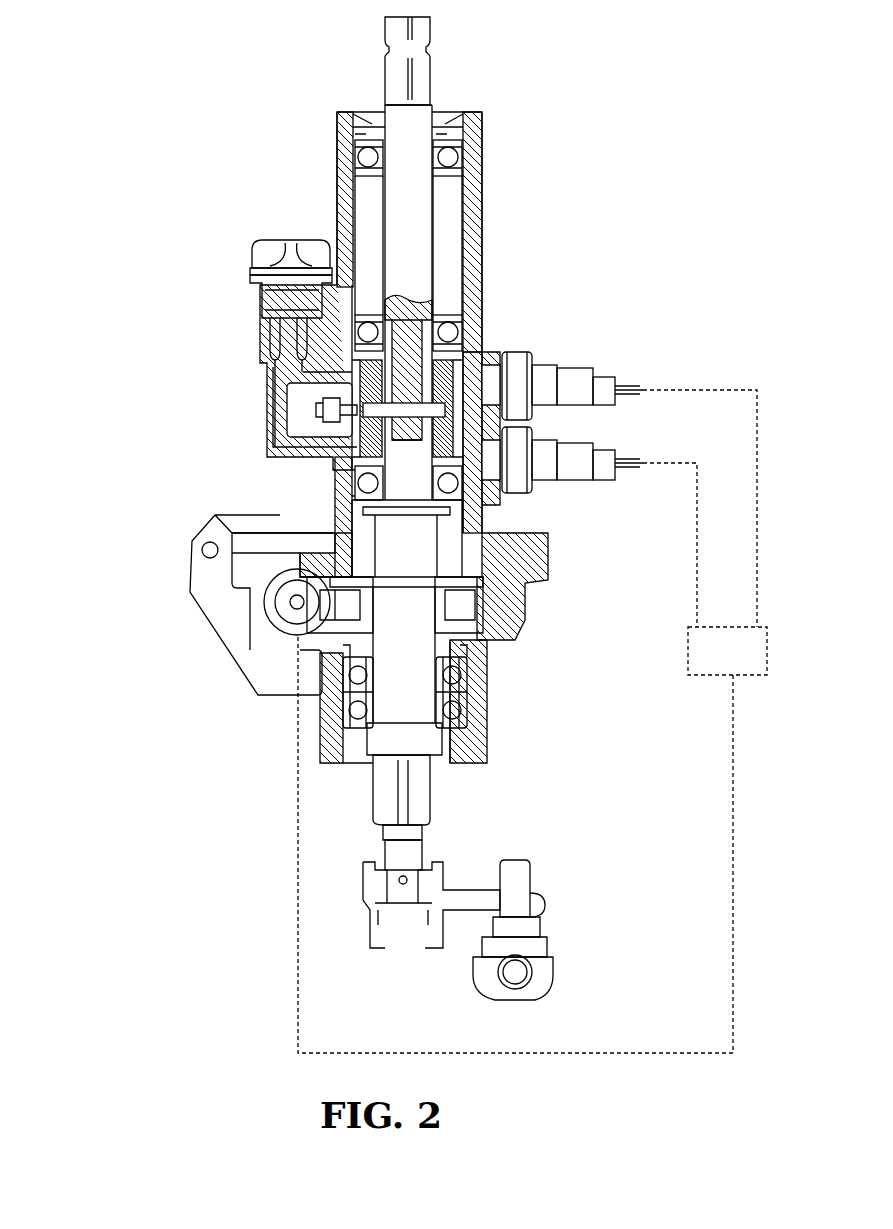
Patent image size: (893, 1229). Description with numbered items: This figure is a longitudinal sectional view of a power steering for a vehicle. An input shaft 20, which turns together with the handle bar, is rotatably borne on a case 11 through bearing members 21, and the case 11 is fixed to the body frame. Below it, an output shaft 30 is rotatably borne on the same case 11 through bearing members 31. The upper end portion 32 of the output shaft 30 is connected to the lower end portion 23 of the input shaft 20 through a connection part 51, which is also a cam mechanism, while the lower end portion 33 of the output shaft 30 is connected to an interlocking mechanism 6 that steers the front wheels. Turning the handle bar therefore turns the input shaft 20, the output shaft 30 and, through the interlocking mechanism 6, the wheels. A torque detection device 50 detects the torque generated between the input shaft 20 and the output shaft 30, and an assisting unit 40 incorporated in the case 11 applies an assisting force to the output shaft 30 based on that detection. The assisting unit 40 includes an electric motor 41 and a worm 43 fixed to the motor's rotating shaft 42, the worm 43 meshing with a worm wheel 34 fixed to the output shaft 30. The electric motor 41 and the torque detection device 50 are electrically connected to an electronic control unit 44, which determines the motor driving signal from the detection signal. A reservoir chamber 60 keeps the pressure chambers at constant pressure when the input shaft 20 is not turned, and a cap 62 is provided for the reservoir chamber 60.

The interlocking mechanism 6 is at (570, 897).
The case 11 is at (485, 205).
The input shaft 20 is at (434, 68).
The bearing members 21 is at (459, 158).
The lower end portion of the input shaft 23 is at (471, 352).
The output shaft 30 is at (436, 805).
The bearing members 31 is at (356, 482).
The upper end portion of the output shaft 32 is at (407, 365).
The lower end portion of the output shaft 33 is at (392, 855).
The worm wheel 34 is at (309, 633).
The assisting unit 40 is at (183, 605).
The electric motor 41 is at (292, 603).
The rotating shaft 42 is at (280, 612).
The worm 43 is at (306, 620).
The electronic control unit 44 is at (768, 648).
The torque detection device 50 is at (570, 331).
The connection part 51 is at (407, 448).
The reservoir chamber 60 is at (252, 307).
The cap 62 is at (257, 252).